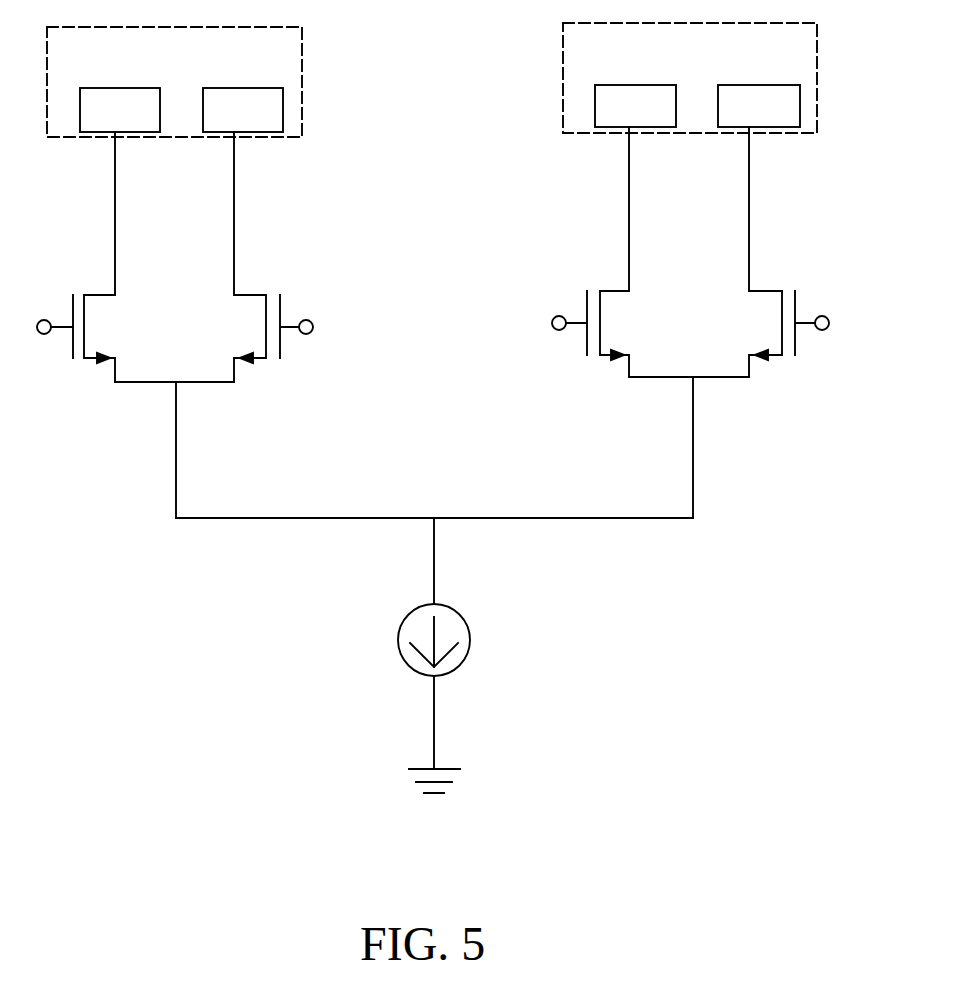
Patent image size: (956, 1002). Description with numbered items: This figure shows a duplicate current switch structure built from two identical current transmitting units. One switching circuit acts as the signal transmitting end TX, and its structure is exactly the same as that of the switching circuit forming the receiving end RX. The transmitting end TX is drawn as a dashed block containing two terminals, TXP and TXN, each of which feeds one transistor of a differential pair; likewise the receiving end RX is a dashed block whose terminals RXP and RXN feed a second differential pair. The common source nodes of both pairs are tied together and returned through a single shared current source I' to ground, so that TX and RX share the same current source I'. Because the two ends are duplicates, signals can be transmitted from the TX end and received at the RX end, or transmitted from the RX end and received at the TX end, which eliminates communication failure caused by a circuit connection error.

The signal transmitting end TX is at (174, 82).
The transmitter positive terminal TXP is at (120, 110).
The transmitter negative terminal TXN is at (243, 110).
The signal receiving end RX is at (690, 78).
The receiver positive terminal RXP is at (635, 106).
The receiver negative terminal RXN is at (759, 106).
The current source I' is at (449, 640).